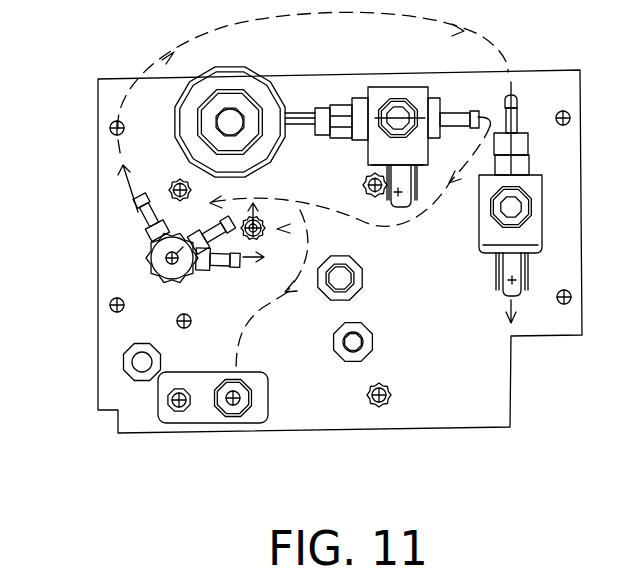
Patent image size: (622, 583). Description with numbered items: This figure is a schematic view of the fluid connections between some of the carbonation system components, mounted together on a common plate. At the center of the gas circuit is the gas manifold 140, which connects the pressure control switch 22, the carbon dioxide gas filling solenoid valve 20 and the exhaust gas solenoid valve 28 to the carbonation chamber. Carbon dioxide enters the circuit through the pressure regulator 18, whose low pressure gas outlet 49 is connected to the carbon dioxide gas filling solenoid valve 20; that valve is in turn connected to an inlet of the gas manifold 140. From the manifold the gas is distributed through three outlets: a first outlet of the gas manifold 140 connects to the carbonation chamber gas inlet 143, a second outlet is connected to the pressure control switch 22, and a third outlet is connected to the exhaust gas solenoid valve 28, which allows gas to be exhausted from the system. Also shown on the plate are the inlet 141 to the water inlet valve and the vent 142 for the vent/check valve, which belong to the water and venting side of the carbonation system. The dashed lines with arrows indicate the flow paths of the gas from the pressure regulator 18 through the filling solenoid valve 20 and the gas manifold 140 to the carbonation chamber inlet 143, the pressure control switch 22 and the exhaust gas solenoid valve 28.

The pressure regulator 18 is at (260, 66).
The low pressure gas outlet 49 is at (306, 100).
The carbon dioxide gas filling solenoid valve 20 is at (386, 90).
The exhaust gas solenoid valve 28 is at (540, 228).
The gas manifold 140 is at (135, 263).
The gas inlet 143 is at (264, 240).
The inlet 141 is at (362, 278).
The vent 142 is at (373, 342).
The pressure control switch 22 is at (236, 408).